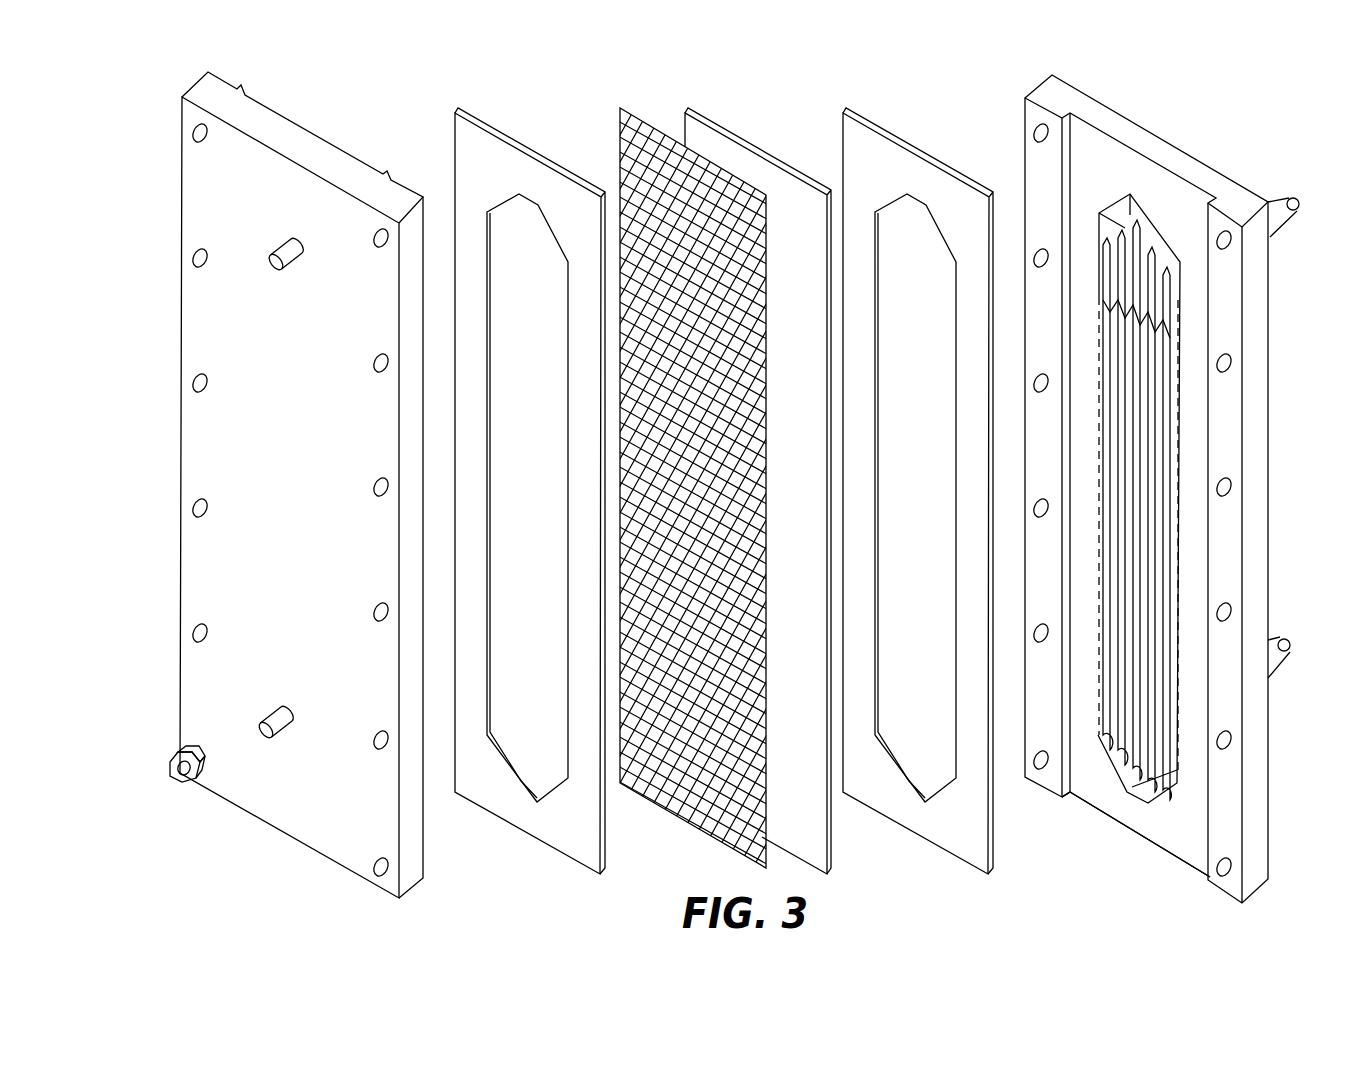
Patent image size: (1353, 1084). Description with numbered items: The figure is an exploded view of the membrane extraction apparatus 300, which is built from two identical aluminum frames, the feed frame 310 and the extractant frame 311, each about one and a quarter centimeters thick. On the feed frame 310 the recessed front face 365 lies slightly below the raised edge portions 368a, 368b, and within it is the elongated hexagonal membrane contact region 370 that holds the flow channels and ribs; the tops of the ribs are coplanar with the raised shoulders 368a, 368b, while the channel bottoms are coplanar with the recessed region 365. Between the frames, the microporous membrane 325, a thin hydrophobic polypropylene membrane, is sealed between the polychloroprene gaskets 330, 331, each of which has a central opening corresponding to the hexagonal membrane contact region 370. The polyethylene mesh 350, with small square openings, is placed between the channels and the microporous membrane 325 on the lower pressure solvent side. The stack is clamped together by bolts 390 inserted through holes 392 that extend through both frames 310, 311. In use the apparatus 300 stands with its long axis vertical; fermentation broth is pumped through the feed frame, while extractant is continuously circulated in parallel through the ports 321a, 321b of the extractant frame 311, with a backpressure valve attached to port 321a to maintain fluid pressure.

The membrane extraction apparatus 300 is at (1222, 142).
The feed frame 310 is at (1128, 128).
The extractant frame 311 is at (227, 93).
The port 321a is at (275, 257).
The port 321b is at (270, 718).
The microporous membrane 325 is at (712, 122).
The gasket 330 is at (855, 113).
The gasket 331 is at (478, 122).
The polyethylene mesh 350 is at (627, 113).
The front face 365 is at (1107, 802).
The raised edge portion 368a is at (1037, 168).
The raised edge portion 368b is at (1227, 293).
The elongated hexagonal membrane contact region 370 is at (1165, 772).
The bolt 390 is at (178, 780).
The hole 392 is at (192, 503).